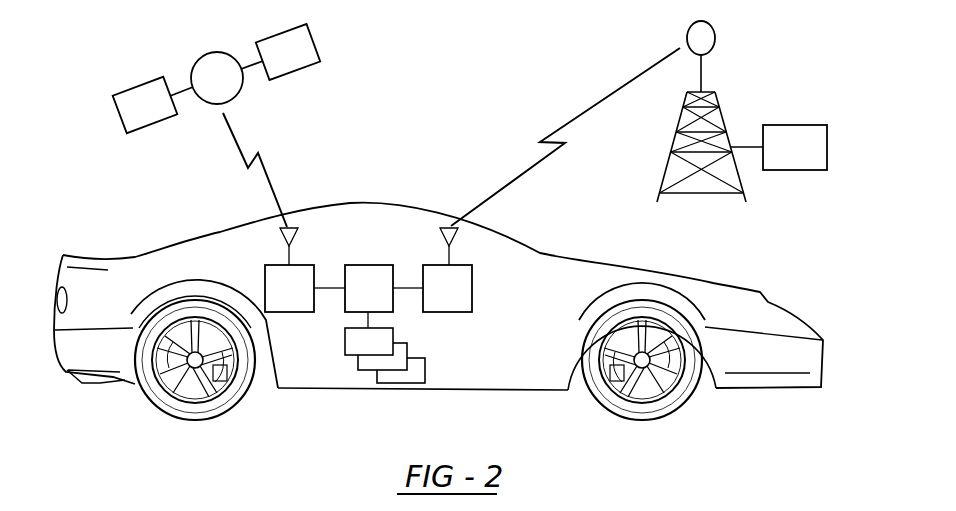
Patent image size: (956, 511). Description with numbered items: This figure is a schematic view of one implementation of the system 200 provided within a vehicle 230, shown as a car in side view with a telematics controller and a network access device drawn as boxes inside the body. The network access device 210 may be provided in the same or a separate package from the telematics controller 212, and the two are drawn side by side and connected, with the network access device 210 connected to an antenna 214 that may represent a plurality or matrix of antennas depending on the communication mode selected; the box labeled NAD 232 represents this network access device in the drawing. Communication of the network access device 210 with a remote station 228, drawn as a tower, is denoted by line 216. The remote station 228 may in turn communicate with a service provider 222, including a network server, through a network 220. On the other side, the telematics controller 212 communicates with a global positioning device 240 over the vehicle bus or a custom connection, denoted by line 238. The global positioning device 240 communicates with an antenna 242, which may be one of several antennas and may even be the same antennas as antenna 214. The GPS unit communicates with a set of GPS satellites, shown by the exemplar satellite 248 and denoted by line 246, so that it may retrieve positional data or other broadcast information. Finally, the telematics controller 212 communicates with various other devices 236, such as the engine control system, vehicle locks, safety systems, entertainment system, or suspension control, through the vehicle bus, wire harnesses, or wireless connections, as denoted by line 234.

The system 200 is at (530, 72).
The network access device 210 is at (472, 283).
The telematics controller 212 is at (367, 265).
The antenna 214 is at (455, 240).
The line 216 is at (600, 100).
The network 220 is at (747, 147).
The service provider 222 is at (797, 170).
The remote station 228 is at (703, 75).
The vehicle 230 is at (777, 390).
The network access device (NAD) 232 is at (410, 288).
The line 234 is at (370, 316).
The various other devices 236 is at (345, 343).
The line 238 is at (336, 288).
The global positioning device 240 is at (265, 277).
The antenna 242 is at (280, 240).
The line 246 is at (268, 172).
The GPS satellite 248 is at (207, 50).